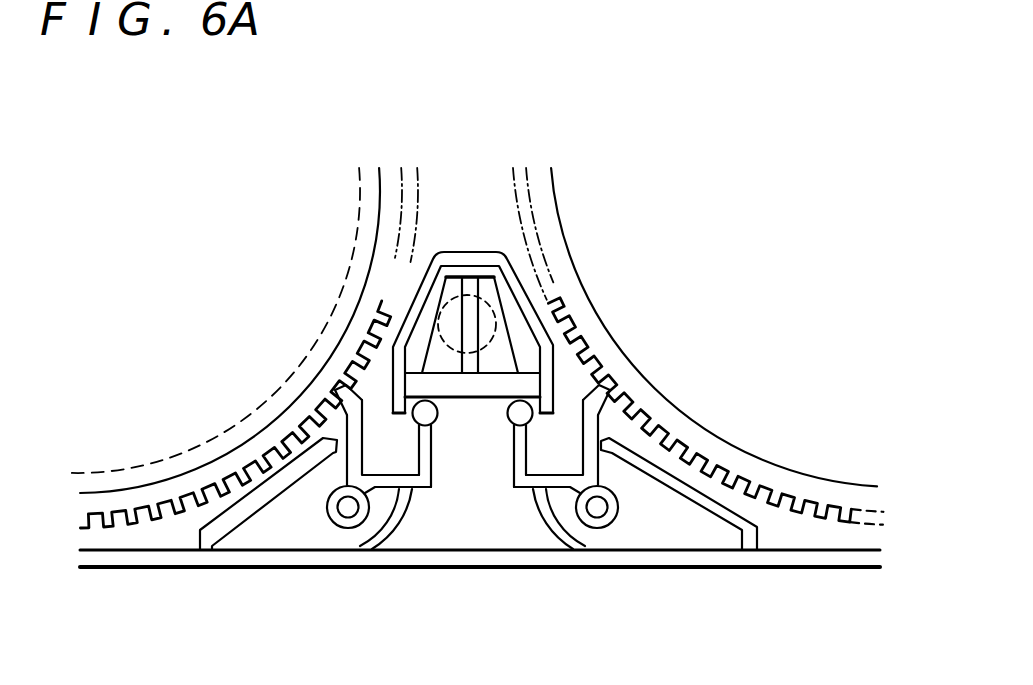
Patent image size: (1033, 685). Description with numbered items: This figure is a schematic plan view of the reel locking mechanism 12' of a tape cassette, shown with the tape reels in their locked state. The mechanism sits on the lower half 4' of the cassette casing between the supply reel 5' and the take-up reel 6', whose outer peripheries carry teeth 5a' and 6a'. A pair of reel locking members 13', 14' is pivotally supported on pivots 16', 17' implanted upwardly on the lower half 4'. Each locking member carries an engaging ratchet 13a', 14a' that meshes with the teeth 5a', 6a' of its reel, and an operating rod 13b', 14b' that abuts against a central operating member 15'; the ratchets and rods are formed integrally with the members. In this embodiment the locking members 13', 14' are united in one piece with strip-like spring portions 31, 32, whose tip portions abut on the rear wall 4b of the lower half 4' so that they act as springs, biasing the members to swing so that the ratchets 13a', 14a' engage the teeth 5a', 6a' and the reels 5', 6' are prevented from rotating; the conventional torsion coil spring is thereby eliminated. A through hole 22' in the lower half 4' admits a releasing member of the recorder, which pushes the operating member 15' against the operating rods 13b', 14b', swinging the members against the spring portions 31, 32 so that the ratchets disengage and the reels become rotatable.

The lower half 4' is at (480, 606).
The rear wall 4b is at (485, 555).
The supply reel 5' is at (244, 395).
The teeth 5a' is at (268, 530).
The take-up reel 6' is at (698, 395).
The teeth 6a' is at (679, 533).
The reel locking mechanism 12' is at (469, 179).
The reel locking member 13' is at (356, 520).
The engaging ratchet 13a' is at (266, 378).
The operating rod 13b' is at (451, 515).
The reel locking member 14' is at (595, 525).
The engaging ratchet 14a' is at (675, 380).
The operating rod 14b' is at (523, 515).
The operating member 15' is at (410, 320).
The pivot 16' is at (352, 556).
The pivot 17' is at (603, 556).
The through hole 22' is at (566, 293).
The spring portion 31 is at (399, 517).
The spring portion 32 is at (560, 515).